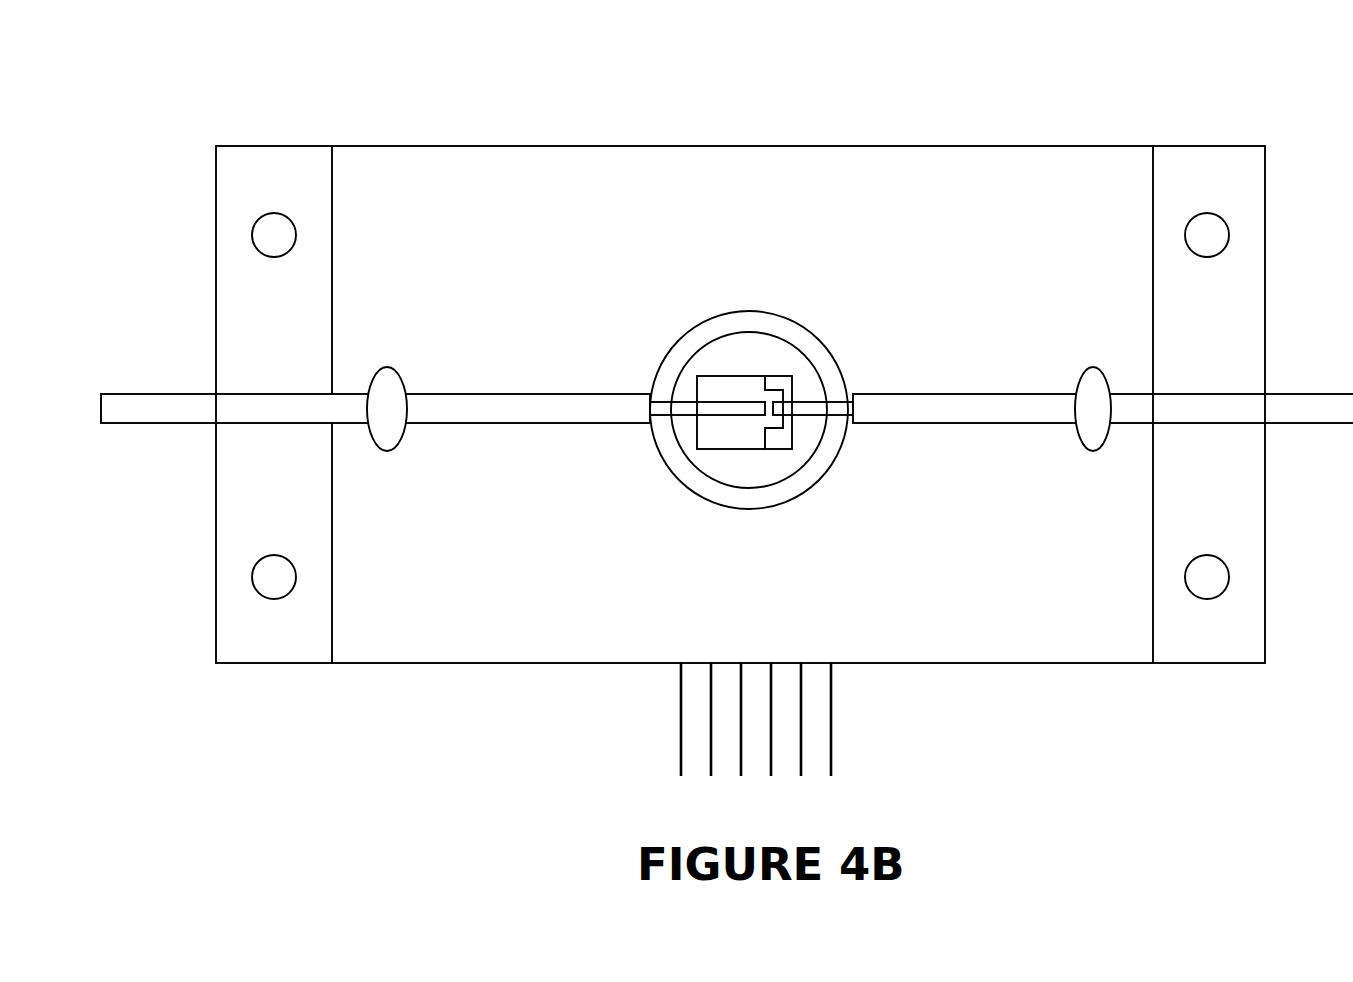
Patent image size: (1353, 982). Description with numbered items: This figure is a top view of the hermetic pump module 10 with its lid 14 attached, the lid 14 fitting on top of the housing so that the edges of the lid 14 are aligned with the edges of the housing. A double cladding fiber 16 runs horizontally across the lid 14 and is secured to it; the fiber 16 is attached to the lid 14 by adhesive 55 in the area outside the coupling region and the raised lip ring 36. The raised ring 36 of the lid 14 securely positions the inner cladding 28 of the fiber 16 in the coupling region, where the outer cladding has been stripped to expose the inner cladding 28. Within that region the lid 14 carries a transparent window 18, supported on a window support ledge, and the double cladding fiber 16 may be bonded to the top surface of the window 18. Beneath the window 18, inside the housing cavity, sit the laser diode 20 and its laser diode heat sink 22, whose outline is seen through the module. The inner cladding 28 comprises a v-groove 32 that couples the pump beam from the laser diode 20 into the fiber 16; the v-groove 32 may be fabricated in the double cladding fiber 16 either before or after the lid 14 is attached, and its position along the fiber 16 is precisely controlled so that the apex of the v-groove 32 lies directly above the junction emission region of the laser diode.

The pump module 10 is at (196, 89).
The lid 14 is at (1018, 165).
The double cladding fiber 16 is at (475, 418).
The window 18 is at (772, 348).
The laser diode 20 is at (768, 395).
The laser diode heat sink 22 is at (714, 376).
The inner cladding 28 is at (666, 402).
The v-groove 32 is at (730, 442).
The raised ring 36 is at (817, 472).
The adhesive 55 is at (400, 368).